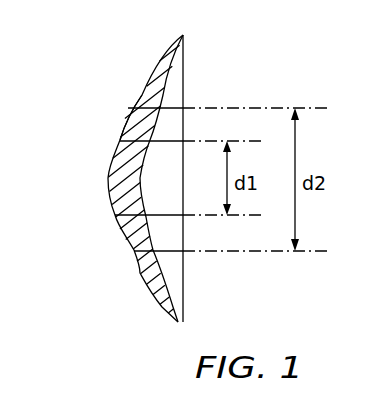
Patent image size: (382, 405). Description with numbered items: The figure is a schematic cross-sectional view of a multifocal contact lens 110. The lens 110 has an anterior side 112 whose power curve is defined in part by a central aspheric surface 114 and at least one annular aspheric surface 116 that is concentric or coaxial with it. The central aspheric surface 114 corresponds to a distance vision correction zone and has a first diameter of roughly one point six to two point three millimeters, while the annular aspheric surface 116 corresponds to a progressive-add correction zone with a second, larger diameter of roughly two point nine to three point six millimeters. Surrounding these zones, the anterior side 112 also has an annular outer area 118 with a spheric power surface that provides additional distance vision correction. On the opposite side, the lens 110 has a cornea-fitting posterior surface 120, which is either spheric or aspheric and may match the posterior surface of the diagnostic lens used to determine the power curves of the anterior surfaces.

The multifocal contact lens 110 is at (257, 82).
The anterior side 112 is at (99, 122).
The central aspheric surface 114 is at (108, 178).
The annular aspheric surface 116 is at (122, 224).
The annular outer area 118 is at (138, 272).
The posterior surface 120 is at (183, 90).